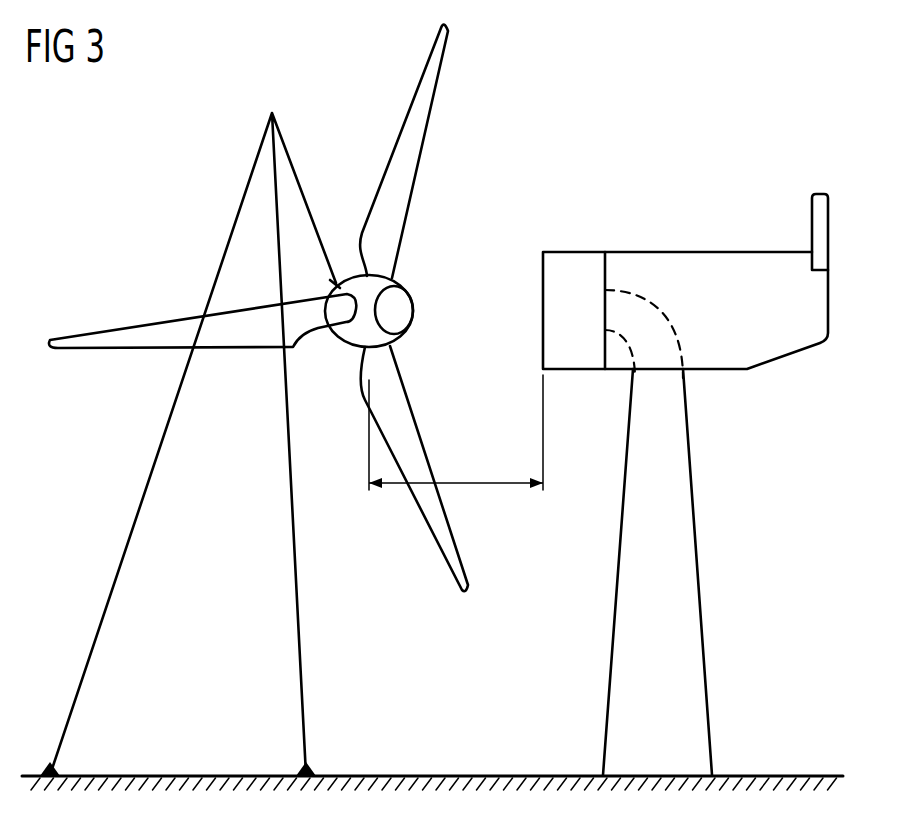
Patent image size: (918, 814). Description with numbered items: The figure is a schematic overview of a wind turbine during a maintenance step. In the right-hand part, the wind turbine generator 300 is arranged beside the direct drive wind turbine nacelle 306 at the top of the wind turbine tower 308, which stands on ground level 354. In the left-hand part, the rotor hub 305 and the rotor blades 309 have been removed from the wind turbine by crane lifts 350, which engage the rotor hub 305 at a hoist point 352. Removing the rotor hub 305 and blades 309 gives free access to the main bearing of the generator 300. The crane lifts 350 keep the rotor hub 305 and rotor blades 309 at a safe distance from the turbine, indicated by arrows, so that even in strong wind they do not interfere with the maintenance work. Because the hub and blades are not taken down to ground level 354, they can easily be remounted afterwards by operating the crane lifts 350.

The wind turbine generator 300 is at (569, 265).
The rotor hub 305 is at (418, 273).
The direct drive wind turbine nacelle 306 is at (659, 265).
The wind turbine tower 308 is at (683, 584).
The rotor blades 309 is at (110, 340).
The crane lifts 350 is at (290, 497).
The hoist point 352 is at (337, 276).
The ground level 354 is at (785, 776).